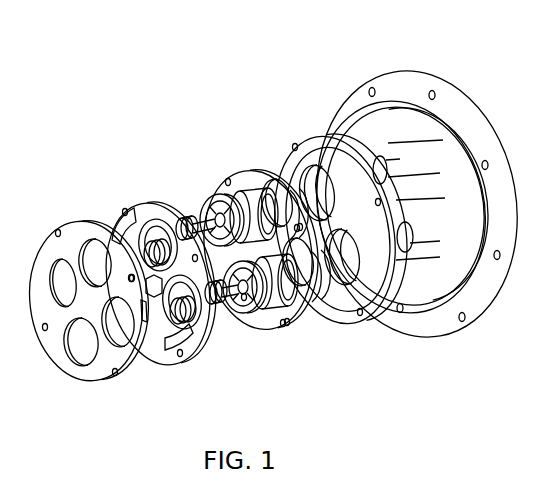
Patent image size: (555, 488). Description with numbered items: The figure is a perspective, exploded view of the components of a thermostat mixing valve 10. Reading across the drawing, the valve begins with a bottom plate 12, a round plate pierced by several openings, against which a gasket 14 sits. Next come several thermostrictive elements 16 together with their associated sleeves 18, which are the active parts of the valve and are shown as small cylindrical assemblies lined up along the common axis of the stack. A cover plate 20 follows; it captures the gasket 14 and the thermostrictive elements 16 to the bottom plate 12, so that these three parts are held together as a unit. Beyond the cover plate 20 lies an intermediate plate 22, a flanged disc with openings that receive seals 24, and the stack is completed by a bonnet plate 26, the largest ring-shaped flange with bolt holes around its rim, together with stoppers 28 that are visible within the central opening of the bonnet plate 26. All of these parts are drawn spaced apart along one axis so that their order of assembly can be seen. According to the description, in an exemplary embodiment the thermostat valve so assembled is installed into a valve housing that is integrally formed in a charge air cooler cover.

The thermostat mixing valve 10 is at (171, 145).
The bottom plate 12 is at (75, 222).
The gasket 14 is at (142, 205).
The thermostrictive elements 16 is at (236, 307).
The sleeves 18 is at (283, 298).
The cover plate 20 is at (240, 172).
The intermediate plate 22 is at (311, 138).
The seals 24 is at (329, 287).
The bonnet plate 26 is at (412, 88).
The stoppers 28 is at (431, 262).